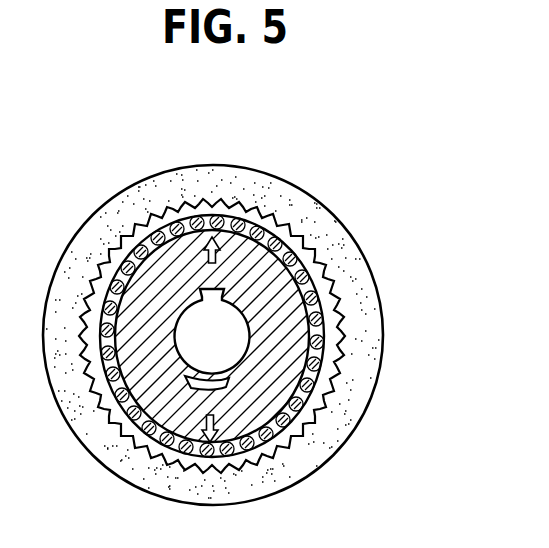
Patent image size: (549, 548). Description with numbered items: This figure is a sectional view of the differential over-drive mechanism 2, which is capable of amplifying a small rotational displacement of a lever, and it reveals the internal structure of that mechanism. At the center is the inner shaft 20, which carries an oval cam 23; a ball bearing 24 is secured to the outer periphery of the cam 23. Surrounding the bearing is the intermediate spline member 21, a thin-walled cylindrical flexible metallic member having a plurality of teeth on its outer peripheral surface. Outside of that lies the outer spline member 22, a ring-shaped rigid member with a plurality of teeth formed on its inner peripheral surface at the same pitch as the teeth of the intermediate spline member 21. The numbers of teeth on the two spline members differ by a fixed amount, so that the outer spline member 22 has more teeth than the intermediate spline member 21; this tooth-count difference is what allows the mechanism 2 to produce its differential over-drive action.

The differential over-drive mechanism 2 is at (269, 300).
The inner shaft 20 is at (269, 276).
The intermediate spline member 21 is at (273, 289).
The outer spline member 22 is at (365, 390).
The oval cam 23 is at (322, 262).
The ball bearing 24 is at (212, 284).